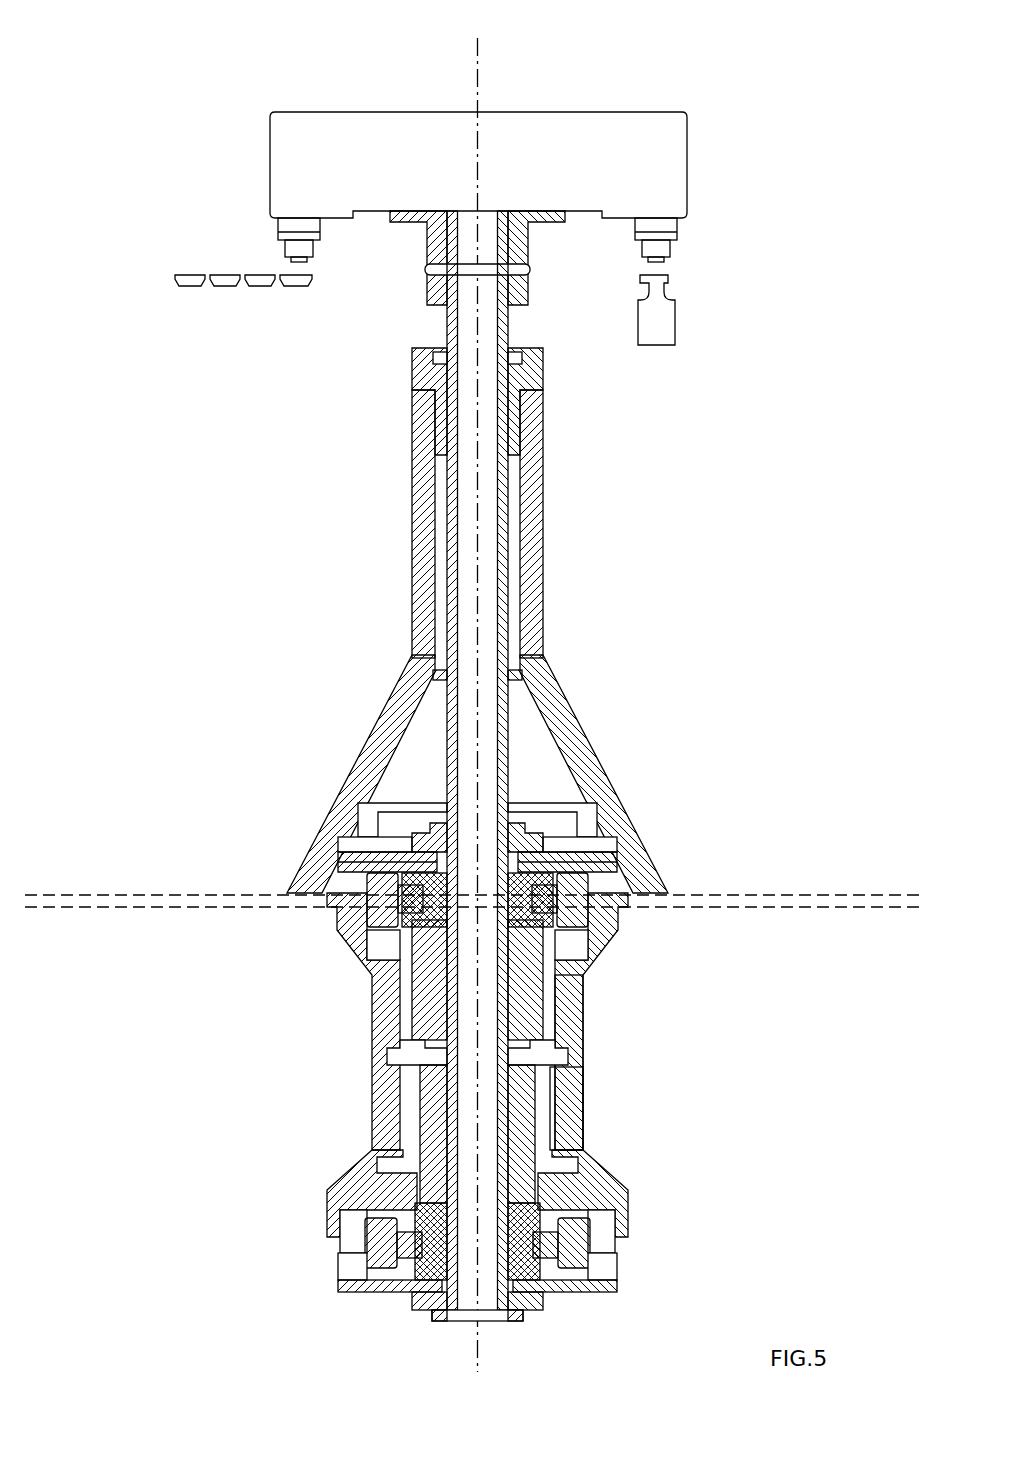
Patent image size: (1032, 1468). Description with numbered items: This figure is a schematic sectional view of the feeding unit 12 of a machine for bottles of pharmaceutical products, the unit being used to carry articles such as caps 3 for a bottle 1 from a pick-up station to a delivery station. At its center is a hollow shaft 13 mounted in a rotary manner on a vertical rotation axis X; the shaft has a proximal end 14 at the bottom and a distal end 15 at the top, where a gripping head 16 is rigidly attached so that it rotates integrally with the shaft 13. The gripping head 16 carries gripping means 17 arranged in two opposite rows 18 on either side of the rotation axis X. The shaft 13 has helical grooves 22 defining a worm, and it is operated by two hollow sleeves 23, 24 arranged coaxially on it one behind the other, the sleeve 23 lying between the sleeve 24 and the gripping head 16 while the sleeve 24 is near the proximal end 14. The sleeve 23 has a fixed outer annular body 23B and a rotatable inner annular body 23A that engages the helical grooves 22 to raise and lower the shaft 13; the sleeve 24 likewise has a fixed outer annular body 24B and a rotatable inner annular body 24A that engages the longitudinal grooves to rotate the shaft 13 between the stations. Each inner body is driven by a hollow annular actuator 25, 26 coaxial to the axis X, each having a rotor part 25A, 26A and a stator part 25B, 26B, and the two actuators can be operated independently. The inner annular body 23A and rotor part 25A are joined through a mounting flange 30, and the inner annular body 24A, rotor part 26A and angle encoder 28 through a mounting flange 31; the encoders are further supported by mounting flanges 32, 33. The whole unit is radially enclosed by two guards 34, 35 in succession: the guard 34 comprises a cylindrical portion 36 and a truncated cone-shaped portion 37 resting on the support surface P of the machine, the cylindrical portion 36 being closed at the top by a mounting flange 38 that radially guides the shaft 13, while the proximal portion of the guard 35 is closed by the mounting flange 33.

The bottle 1 is at (668, 318).
The cap 3 is at (193, 285).
The feeding unit 12 is at (240, 95).
The shaft 13 is at (505, 690).
The proximal end 14 is at (490, 1330).
The distal end 15 is at (490, 205).
The gripping head 16 is at (285, 153).
The gripping means 17 is at (283, 230).
The rows 18 is at (335, 240).
The helical grooves 22 is at (445, 690).
The sleeve 23 is at (392, 993).
The inner annular body 23A is at (527, 985).
The outer annular body 23B is at (555, 1000).
The sleeve 24 is at (395, 1118).
The inner annular body 24A is at (525, 1130).
The outer annular body 24B is at (545, 1130).
The actuator 25 is at (352, 870).
The rotor part 25A is at (610, 870).
The stator part 25B is at (580, 835).
The actuator 26 is at (362, 1265).
The rotor part 26A is at (543, 1255).
The stator part 26B is at (600, 1245).
The angle encoder 28 is at (532, 830).
The mounting flange 30 is at (420, 900).
The mounting flange 31 is at (420, 1265).
The further mounting flange 32 is at (380, 845).
The further mounting flange 33 is at (600, 1290).
The guard 34 is at (540, 555).
The guard 35 is at (572, 1050).
The cylindrical portion 36 is at (418, 550).
The truncated cone-shaped portion 37 is at (372, 745).
The mounting flange 38 is at (545, 368).
The support surface P is at (860, 893).
The rotation axis X is at (480, 65).